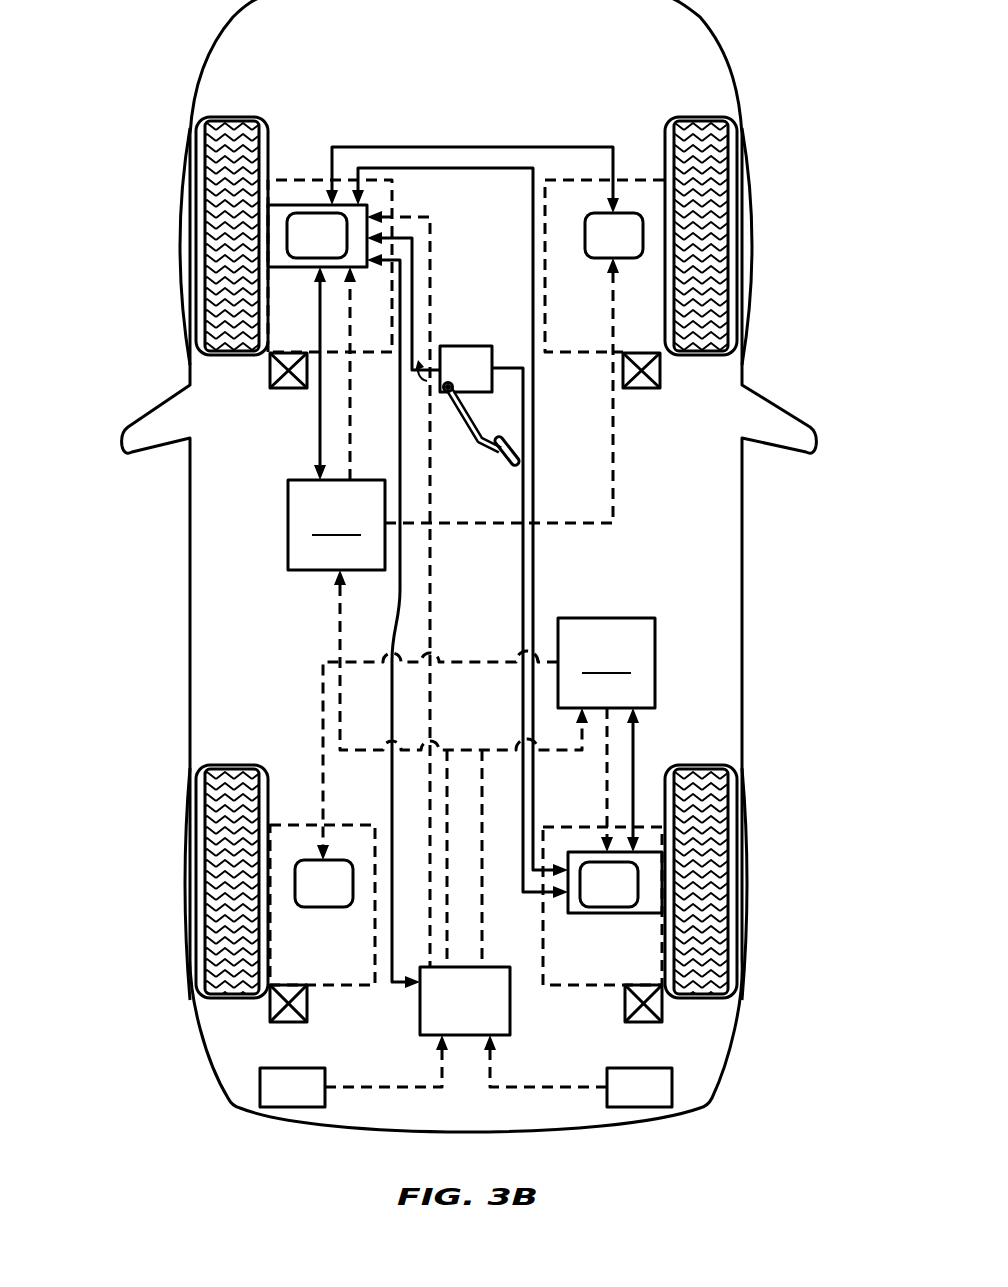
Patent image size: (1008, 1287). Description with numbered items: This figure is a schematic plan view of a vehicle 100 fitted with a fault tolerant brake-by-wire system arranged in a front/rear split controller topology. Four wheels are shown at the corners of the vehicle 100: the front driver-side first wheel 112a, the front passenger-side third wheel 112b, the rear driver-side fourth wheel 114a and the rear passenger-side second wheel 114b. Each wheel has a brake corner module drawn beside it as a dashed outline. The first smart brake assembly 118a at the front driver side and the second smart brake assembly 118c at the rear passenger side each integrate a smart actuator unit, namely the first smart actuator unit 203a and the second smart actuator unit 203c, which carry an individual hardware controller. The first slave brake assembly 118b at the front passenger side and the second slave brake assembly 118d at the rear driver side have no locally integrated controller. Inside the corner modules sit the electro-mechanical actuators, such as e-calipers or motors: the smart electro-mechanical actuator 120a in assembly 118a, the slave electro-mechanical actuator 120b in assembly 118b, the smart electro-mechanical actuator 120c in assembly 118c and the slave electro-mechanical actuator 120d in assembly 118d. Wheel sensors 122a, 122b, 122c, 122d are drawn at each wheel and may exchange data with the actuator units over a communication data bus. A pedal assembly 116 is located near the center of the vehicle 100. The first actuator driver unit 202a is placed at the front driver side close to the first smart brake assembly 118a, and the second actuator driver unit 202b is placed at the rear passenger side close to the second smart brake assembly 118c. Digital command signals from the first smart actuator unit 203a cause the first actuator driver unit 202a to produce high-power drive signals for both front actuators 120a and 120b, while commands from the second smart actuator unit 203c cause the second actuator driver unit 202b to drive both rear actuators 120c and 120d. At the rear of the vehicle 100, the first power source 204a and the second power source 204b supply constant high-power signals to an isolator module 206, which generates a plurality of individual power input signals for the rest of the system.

The vehicle 100 is at (160, 560).
The first wheel 112a is at (182, 213).
The third wheel 112b is at (752, 214).
The fourth wheel 114a is at (176, 916).
The second wheel 114b is at (756, 916).
The pedal assembly 116 is at (455, 365).
The first smart brake assembly 118a is at (285, 178).
The first slave brake assembly 118b is at (643, 178).
The second smart brake assembly 118c is at (651, 827).
The second slave brake assembly 118d is at (302, 825).
The smart electro-mechanical actuator 120a is at (310, 228).
The slave electro-mechanical actuator 120b is at (627, 227).
The smart electro-mechanical actuator 120c is at (602, 888).
The slave electro-mechanical actuator 120d is at (323, 890).
The wheel sensor 122a is at (270, 369).
The wheel sensor 122b is at (660, 368).
The wheel sensor 122c is at (662, 1008).
The wheel sensor 122d is at (268, 1005).
The first actuator driver unit 202a is at (336, 525).
The second actuator driver unit 202b is at (606, 663).
The first smart actuator unit 203a is at (297, 205).
The second smart actuator unit 203c is at (625, 913).
The first power source 204a is at (258, 1092).
The second power source 204b is at (672, 1089).
The isolator module 206 is at (420, 1020).